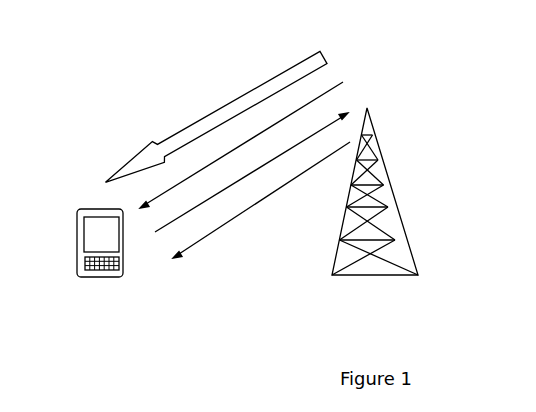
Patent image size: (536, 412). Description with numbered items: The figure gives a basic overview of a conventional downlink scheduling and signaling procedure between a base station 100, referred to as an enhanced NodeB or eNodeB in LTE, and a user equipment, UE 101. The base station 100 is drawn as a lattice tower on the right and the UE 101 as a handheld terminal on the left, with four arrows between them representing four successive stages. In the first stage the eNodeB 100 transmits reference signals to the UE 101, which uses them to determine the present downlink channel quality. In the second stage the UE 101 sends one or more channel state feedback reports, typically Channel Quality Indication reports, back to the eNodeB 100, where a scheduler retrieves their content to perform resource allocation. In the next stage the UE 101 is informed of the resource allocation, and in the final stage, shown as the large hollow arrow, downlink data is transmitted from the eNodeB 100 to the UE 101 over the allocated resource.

The base station 100 is at (377, 275).
The UE 101 is at (110, 277).